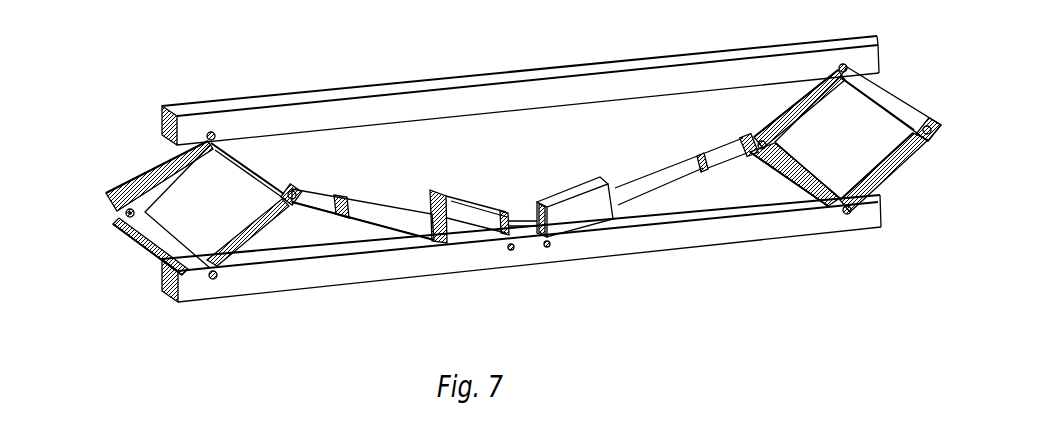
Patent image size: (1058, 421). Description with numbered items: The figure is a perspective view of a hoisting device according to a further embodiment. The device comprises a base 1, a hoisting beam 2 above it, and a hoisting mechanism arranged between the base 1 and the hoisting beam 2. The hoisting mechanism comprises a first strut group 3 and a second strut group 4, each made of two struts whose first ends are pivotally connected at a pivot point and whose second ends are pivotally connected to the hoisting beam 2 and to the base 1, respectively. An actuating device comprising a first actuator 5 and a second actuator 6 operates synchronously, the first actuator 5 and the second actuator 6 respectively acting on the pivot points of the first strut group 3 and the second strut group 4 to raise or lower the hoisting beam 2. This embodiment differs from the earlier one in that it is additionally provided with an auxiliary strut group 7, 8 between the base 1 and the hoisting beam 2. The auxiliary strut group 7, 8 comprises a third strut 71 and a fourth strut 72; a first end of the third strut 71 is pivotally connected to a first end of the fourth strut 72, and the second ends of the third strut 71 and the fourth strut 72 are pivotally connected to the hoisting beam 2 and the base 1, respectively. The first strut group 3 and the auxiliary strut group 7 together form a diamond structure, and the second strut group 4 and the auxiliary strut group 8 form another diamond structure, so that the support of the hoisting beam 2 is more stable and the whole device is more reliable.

The base 1 is at (458, 255).
The hoisting beam 2 is at (457, 102).
The first strut group 3 is at (263, 172).
The second strut group 4 is at (782, 128).
The first actuator 5 is at (437, 198).
The second actuator 6 is at (662, 183).
The auxiliary strut group 7 is at (115, 187).
The third strut 71 is at (163, 184).
The fourth strut 72 is at (163, 245).
The auxiliary strut group 8 is at (888, 98).